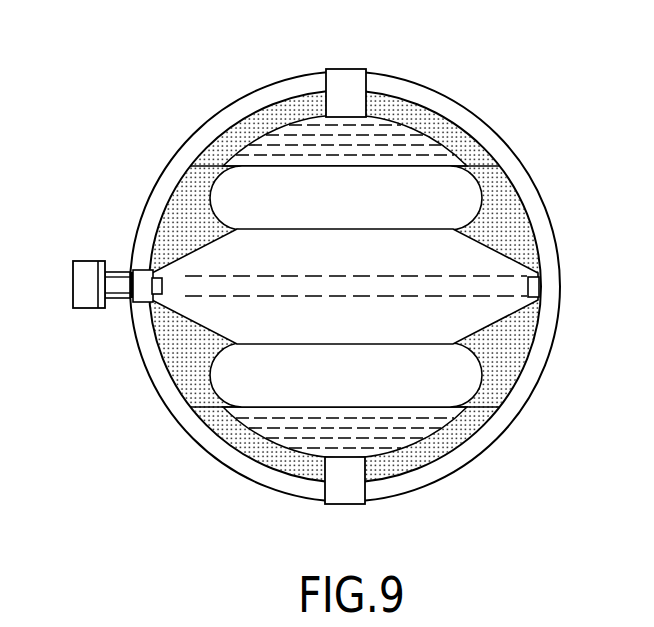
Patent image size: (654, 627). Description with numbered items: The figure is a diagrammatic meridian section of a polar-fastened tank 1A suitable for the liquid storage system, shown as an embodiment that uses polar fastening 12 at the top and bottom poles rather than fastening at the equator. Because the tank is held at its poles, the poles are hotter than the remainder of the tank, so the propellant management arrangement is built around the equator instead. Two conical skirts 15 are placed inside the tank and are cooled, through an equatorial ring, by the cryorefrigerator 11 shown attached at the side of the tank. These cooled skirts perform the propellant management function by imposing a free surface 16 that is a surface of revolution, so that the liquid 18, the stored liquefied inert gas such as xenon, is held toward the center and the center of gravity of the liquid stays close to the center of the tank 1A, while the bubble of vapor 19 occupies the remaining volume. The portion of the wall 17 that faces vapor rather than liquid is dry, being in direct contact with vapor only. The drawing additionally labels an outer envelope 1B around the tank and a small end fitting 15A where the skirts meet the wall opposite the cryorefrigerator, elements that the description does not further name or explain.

The tank 1A is at (196, 410).
The outer casing of container 1B is at (229, 467).
The cryorefrigerator 11 is at (78, 282).
The polar fastening 12 is at (342, 86).
The conical skirts 15 is at (200, 241).
The chamber end fitting 15A is at (541, 283).
The free surface 16 is at (243, 168).
The wall 17 is at (265, 127).
The liquid 18 is at (259, 150).
The bubble of vapor 19 is at (197, 342).